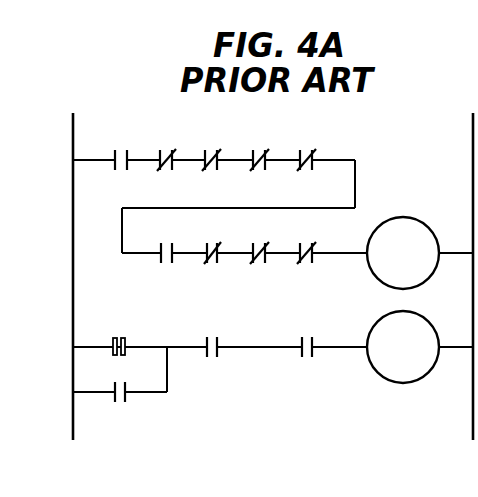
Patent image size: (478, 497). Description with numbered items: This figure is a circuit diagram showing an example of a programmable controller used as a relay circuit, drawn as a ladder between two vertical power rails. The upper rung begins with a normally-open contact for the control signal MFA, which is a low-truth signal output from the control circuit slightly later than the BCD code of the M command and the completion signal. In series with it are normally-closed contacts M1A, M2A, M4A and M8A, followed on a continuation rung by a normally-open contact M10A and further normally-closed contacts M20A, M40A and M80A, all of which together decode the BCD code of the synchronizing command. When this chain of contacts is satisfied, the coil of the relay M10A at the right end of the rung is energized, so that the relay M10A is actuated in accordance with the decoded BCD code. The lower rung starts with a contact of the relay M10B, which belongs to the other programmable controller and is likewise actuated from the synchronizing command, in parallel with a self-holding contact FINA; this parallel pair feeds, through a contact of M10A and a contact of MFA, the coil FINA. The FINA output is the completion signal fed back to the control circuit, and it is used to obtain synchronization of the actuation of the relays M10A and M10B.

The control signal MFA is at (208, 243).
The BCD code bit contact M1A is at (163, 150).
The BCD code bit contact M2A is at (211, 150).
The BCD code bit contact M4A is at (259, 150).
The BCD code bit contact M8A is at (307, 150).
The relay M10A is at (289, 287).
The BCD code bit contact M20A is at (210, 237).
The BCD code bit contact M40A is at (259, 245).
The BCD code bit contact M80A is at (307, 237).
The relay M10B is at (119, 335).
The completion signal FINA is at (267, 356).